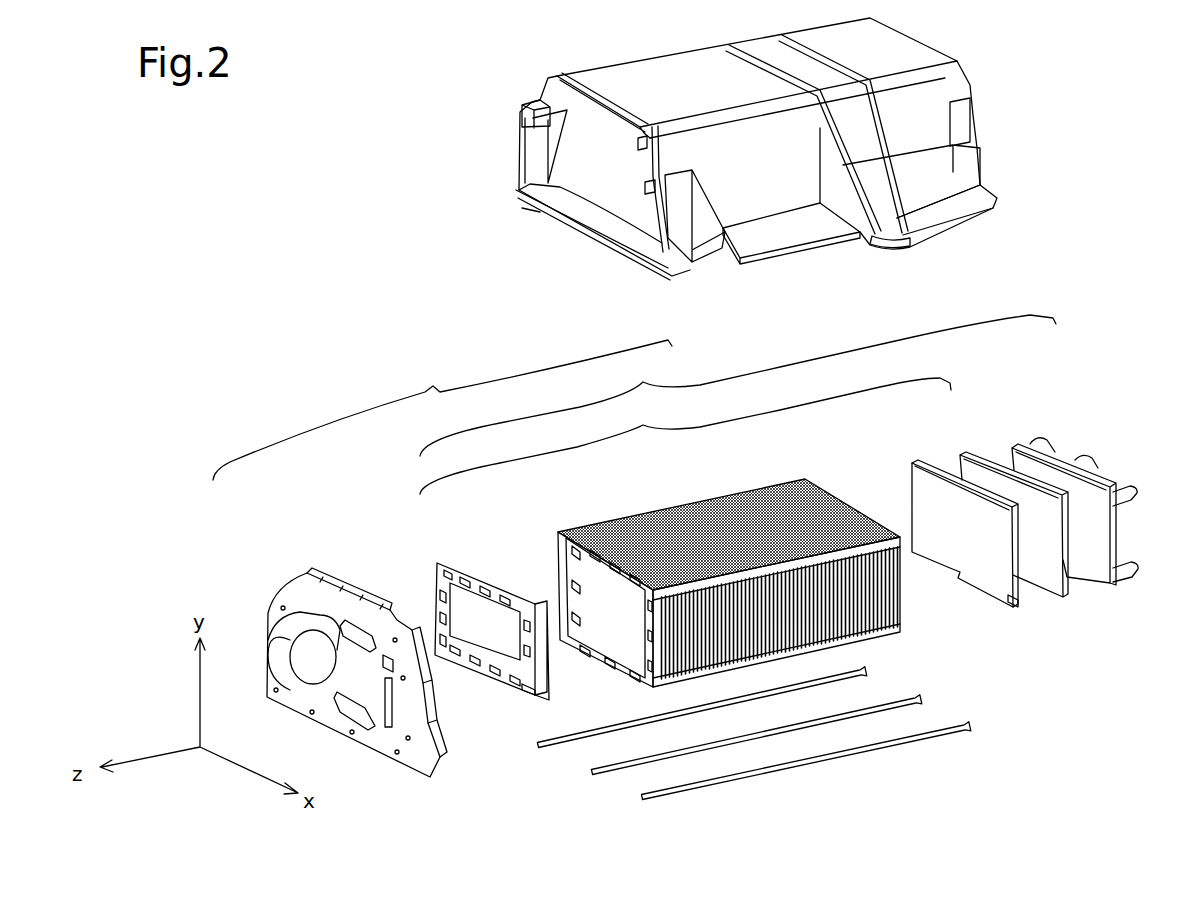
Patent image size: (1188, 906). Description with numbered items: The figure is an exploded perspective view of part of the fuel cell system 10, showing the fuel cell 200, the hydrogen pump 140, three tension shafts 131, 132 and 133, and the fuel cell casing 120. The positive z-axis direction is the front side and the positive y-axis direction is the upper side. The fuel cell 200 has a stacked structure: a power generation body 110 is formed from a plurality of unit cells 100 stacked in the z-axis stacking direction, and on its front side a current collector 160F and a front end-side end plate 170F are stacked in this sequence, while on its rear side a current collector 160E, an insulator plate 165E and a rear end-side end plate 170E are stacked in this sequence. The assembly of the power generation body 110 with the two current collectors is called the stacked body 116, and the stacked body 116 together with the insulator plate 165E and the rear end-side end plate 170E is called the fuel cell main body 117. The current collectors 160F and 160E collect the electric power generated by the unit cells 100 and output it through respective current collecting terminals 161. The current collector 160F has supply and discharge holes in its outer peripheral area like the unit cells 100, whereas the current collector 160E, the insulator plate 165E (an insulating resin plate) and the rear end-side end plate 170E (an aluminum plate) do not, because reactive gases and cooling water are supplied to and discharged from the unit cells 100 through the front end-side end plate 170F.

The fuel cell system 10 is at (1062, 50).
The unit cells 100 is at (678, 503).
The power generation body 110 is at (629, 491).
The stacked body 116 is at (685, 436).
The fuel cell main body 117 is at (738, 385).
The fuel cell casing 120 is at (923, 48).
The tension shaft 131 is at (590, 773).
The tension shaft 132 is at (537, 746).
The tension shaft 133 is at (642, 799).
The hydrogen pump 140 is at (270, 600).
The current collector 160F is at (442, 560).
The current collector 160E is at (925, 458).
The current collecting terminals 161 is at (547, 684).
The insulator plate 165E is at (967, 450).
The front end-side end plate 170F is at (338, 580).
The rear end-side end plate 170E is at (1013, 447).
The fuel cell 200 is at (442, 410).